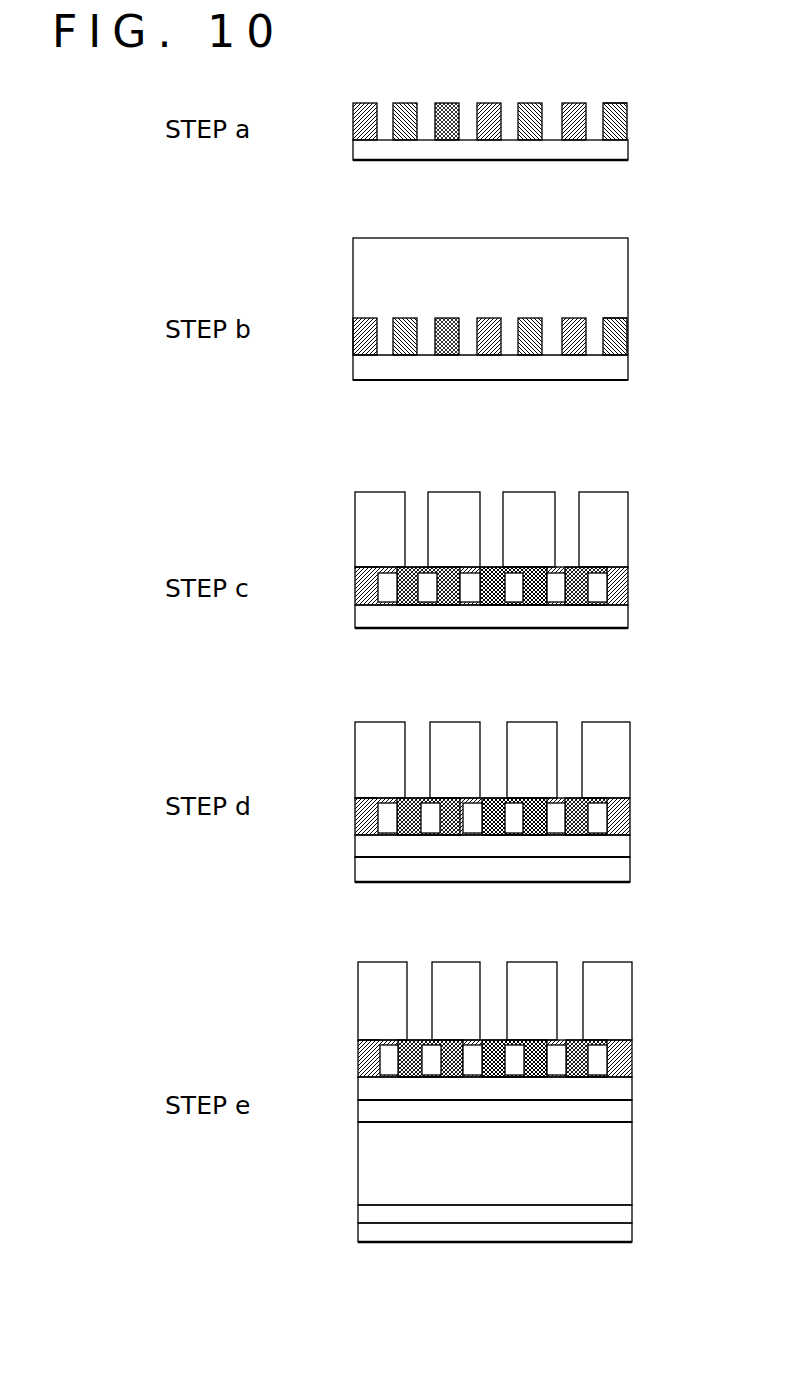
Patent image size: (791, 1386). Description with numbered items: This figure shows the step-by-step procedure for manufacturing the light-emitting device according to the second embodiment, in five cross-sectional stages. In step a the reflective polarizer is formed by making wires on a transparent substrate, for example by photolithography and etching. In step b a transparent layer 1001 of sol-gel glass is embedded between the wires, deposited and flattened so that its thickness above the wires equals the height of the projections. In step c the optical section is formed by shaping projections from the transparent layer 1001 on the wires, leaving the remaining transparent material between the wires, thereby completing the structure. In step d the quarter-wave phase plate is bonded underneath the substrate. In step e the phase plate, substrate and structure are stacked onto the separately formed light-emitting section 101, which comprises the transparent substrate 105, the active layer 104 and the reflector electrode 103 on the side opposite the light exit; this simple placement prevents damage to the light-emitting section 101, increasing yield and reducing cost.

The light-emitting section 101 is at (547, 1182).
The reflector electrode 103 is at (628, 1236).
The active layer 104 is at (627, 1212).
The transparent substrate 105 is at (626, 1166).
The transparent layer 1001 is at (628, 254).